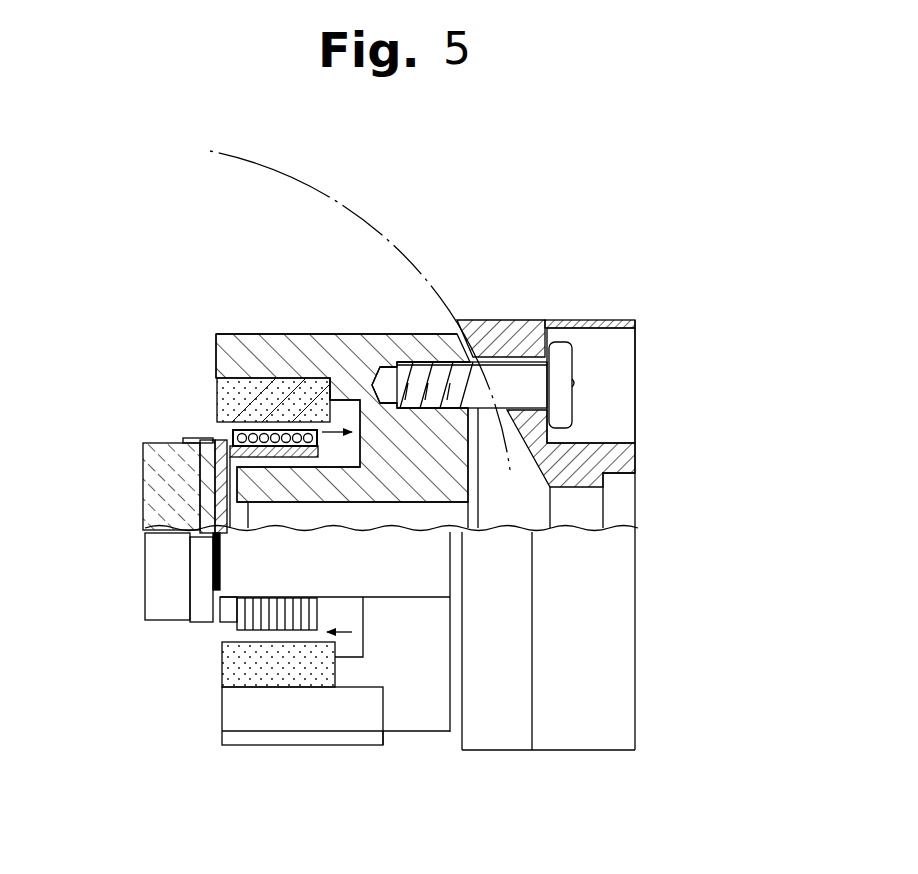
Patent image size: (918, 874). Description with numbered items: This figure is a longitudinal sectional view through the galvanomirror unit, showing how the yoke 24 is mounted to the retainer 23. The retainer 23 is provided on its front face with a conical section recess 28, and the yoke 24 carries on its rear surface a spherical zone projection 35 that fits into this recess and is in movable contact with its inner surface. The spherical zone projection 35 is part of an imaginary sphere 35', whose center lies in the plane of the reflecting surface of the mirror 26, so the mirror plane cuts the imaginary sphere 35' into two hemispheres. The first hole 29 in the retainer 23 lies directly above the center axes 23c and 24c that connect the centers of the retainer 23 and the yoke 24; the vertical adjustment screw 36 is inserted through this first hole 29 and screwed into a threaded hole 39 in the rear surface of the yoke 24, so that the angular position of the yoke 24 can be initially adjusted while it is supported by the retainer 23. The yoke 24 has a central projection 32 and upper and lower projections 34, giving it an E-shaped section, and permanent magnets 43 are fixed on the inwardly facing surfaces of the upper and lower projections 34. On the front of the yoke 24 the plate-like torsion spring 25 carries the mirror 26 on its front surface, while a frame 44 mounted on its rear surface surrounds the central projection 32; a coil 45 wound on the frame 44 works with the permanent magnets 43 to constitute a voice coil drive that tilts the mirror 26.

The retainer 23 is at (600, 752).
The center axis of the retainer 23c is at (590, 512).
The yoke 24 is at (400, 741).
The center axis of the yoke 24c is at (467, 537).
The torsion spring 25 is at (213, 565).
The mirror 26 is at (155, 563).
The conical section recess 28 is at (548, 484).
The first hole 29 is at (495, 353).
The central projection 32 is at (408, 563).
The upper and lower projections 34 is at (288, 345).
The spherical zone projection 35 is at (483, 397).
The imaginary sphere 35' is at (360, 310).
The vertical adjustment screw 36 is at (510, 383).
The threaded hole 39 is at (400, 360).
The permanent magnets 43 is at (217, 402).
The frame 44 is at (225, 460).
The coil 45 is at (237, 617).